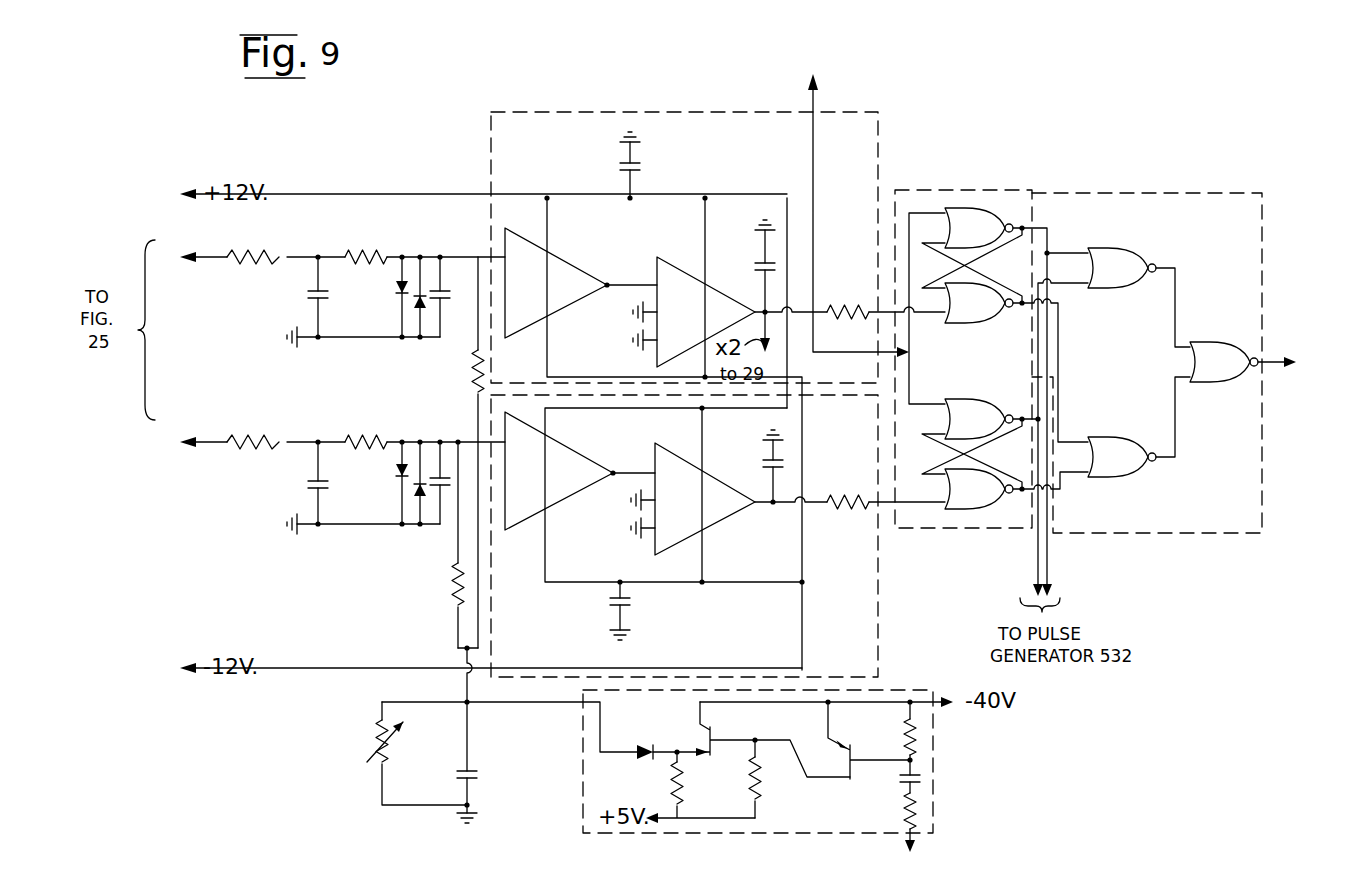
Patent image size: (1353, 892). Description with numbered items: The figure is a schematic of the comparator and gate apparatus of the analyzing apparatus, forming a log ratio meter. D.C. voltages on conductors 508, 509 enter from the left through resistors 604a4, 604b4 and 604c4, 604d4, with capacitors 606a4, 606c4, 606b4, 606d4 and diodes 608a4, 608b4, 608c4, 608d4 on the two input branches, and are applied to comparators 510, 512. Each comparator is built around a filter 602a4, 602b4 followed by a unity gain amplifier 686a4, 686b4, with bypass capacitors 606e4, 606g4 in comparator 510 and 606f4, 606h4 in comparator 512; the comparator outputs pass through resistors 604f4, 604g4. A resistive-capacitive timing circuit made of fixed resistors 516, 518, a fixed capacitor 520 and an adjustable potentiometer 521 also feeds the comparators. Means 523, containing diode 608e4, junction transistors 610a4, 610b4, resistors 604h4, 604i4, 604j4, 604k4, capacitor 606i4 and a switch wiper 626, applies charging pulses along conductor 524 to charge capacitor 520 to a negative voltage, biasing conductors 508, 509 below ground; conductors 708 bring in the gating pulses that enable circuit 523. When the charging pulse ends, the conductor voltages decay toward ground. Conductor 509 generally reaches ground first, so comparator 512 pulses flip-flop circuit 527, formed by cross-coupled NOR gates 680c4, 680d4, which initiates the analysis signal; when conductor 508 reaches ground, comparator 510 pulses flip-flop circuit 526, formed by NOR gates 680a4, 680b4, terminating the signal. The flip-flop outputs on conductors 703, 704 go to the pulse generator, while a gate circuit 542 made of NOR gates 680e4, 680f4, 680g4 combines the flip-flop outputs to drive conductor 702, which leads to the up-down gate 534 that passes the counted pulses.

The conductor 508 is at (207, 257).
The conductor 509 is at (204, 440).
The comparator 510 is at (884, 164).
The comparator 512 is at (880, 605).
The fixed resistor 516 is at (473, 377).
The fixed resistor 518 is at (456, 577).
The fixed capacitor 520 is at (478, 775).
The adjustable potentiometer 521 is at (365, 740).
The charging pulse means 523 is at (570, 827).
The conductor 524 is at (553, 703).
The flip-flop circuit 526 is at (1010, 190).
The flip-flop circuit 527 is at (1000, 542).
The up-down gate 534 is at (1315, 370).
The gate circuit 542 is at (1173, 186).
The filter 602a4 is at (552, 252).
The filter 602b4 is at (526, 536).
The resistor 604a4 is at (300, 228).
The resistor 604b4 is at (395, 228).
The resistor 604c4 is at (300, 413).
The resistor 604d4 is at (395, 412).
The resistor 604f4 is at (859, 311).
The resistor 604g4 is at (862, 506).
The resistor 604h4 is at (672, 783).
The resistor 604i4 is at (764, 774).
The resistor 604j4 is at (918, 740).
The resistor 604k4 is at (922, 800).
The capacitor 606a4 is at (306, 295).
The capacitor 606b4 is at (304, 482).
The capacitor 606c4 is at (450, 300).
The capacitor 606d4 is at (453, 484).
The capacitor 606e4 is at (643, 167).
The capacitor 606f4 is at (632, 603).
The capacitor 606g4 is at (758, 246).
The capacitor 606h4 is at (747, 464).
The capacitor 606i4 is at (922, 782).
The diode 608a4 is at (366, 297).
The diode 608b4 is at (403, 300).
The diode 608c4 is at (397, 470).
The diode 608d4 is at (403, 495).
The diode 608e4 is at (663, 728).
The junction transistor 610a4 is at (710, 733).
The junction transistor 610b4 is at (854, 746).
The switch wiper 626 is at (902, 826).
The NOR gate 680a4 is at (1015, 215).
The NOR gate 680b4 is at (981, 323).
The NOR gate 680c4 is at (1010, 398).
The NOR gate 680d4 is at (985, 501).
The NOR gate 680e4 is at (1172, 238).
The NOR gate 680f4 is at (1145, 422).
The NOR gate 680g4 is at (1245, 330).
The unity gain amplifier 686a4 is at (645, 342).
The unity gain amplifier 686b4 is at (642, 542).
The conductor 702 is at (1254, 370).
The conductor 703 is at (1025, 579).
The conductor 704 is at (1047, 572).
The conductor 708 is at (810, 104).